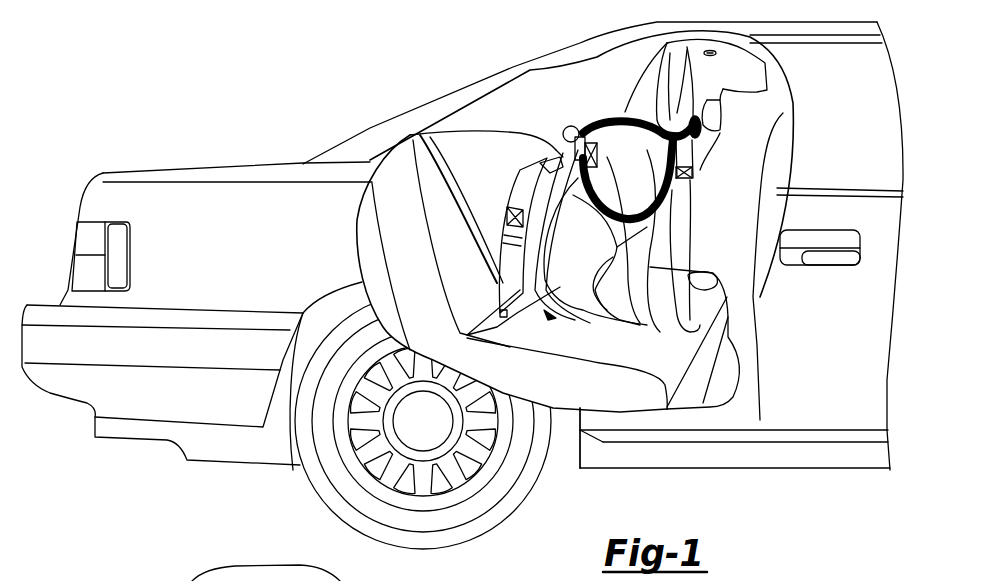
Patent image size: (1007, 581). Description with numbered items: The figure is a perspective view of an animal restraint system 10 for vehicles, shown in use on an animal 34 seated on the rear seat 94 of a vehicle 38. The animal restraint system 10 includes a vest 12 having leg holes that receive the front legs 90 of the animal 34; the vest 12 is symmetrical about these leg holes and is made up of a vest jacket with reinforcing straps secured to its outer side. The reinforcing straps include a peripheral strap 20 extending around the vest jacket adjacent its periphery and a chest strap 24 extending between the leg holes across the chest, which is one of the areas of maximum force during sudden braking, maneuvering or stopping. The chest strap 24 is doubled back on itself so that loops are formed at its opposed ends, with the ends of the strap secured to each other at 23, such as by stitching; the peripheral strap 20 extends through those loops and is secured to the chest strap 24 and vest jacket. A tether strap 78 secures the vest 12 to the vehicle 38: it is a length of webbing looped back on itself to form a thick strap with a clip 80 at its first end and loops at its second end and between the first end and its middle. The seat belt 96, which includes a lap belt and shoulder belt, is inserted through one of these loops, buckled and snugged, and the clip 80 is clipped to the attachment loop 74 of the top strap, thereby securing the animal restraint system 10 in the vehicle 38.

The animal restraint system 10 is at (462, 246).
The vest 12 is at (600, 80).
The peripheral strap 20 is at (605, 110).
The securement of chest strap ends 23 is at (690, 168).
The chest strap 24 is at (690, 157).
The animal 34 is at (626, 118).
The vehicle 38 is at (232, 176).
The attachment loop 74 is at (575, 125).
The tether strap 78 is at (520, 173).
The clip 80 is at (558, 148).
The front legs 90 is at (687, 307).
The rear seat 94 is at (590, 367).
The seat belt 96 is at (483, 313).